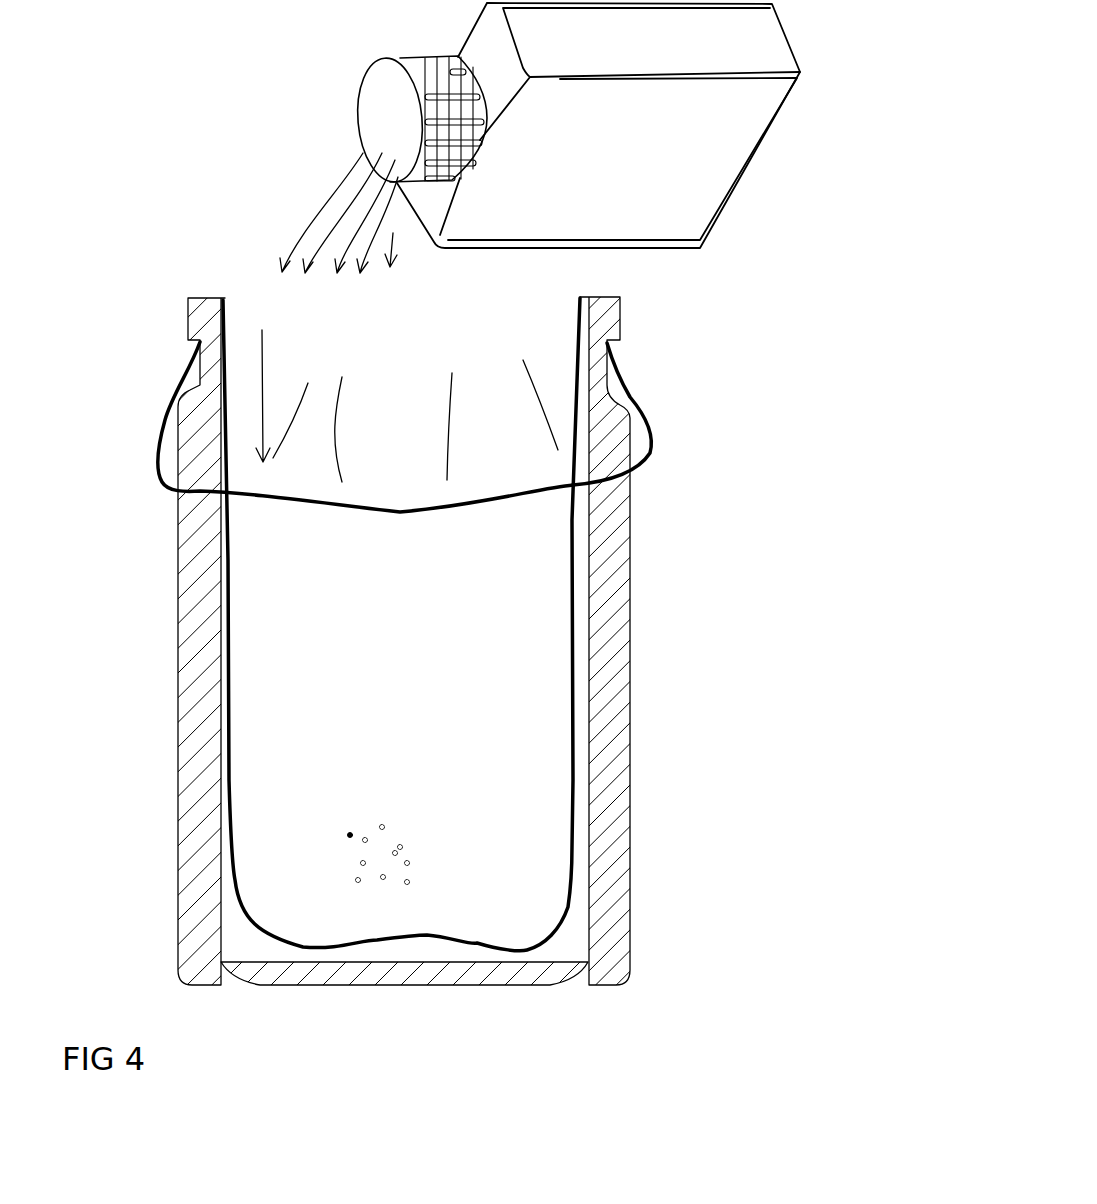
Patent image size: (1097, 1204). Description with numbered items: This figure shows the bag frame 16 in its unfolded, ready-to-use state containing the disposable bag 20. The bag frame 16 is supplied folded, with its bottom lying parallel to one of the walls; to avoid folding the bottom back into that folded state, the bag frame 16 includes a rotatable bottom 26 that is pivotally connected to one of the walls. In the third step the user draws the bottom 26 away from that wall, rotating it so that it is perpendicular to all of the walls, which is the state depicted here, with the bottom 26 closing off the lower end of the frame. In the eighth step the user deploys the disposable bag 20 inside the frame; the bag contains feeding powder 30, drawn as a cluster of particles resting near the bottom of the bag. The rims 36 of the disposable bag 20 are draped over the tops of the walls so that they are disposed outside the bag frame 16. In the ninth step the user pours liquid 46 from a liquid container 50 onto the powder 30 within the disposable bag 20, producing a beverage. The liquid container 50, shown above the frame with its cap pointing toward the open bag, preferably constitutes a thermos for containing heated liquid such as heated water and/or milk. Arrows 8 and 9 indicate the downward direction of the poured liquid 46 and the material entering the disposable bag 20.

The liquid container 50 is at (483, 40).
The liquid 46 is at (317, 180).
The flow direction arrow 9 is at (387, 244).
The direction arrow 8 is at (262, 330).
The bag frame 16 is at (618, 556).
The disposable bag 20 is at (580, 735).
The rims 36 is at (652, 447).
The feeding powder 30 is at (378, 853).
The rotatable bottom 26 is at (303, 977).